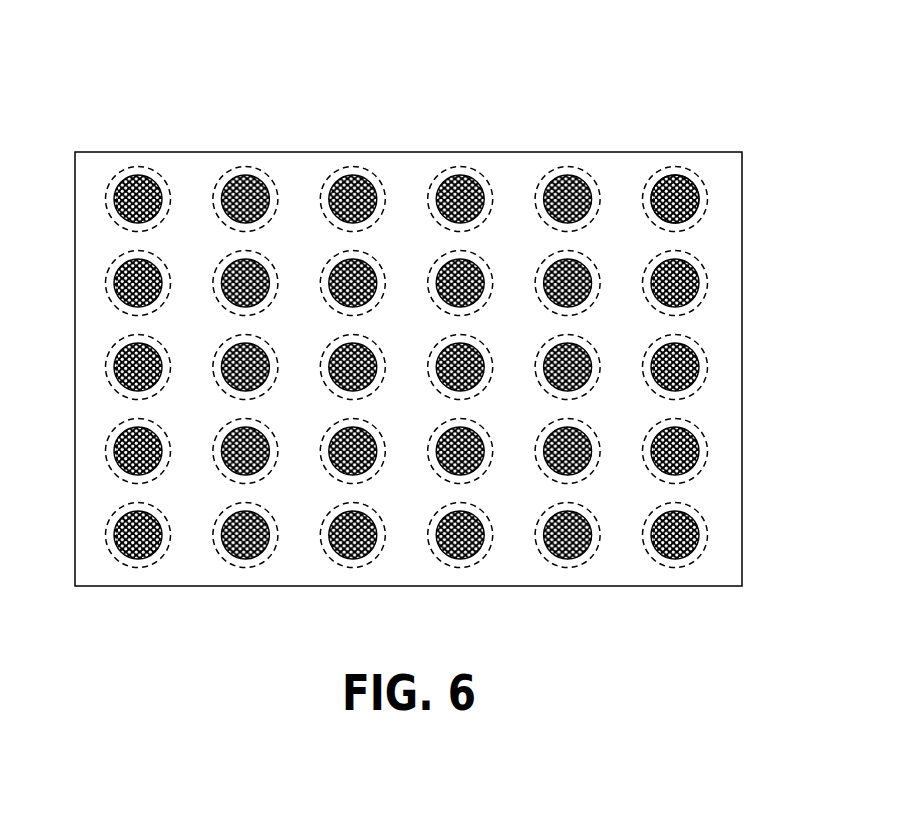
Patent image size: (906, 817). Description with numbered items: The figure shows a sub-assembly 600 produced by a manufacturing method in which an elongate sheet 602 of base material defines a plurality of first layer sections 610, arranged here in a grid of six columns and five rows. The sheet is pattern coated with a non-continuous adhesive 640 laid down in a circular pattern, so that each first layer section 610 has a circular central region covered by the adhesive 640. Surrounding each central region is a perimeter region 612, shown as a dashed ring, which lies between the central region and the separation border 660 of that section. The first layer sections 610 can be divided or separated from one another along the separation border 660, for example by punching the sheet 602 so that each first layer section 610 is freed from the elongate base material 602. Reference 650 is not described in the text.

The sub-assembly 600 is at (462, 66).
The elongate sheet 602 is at (720, 420).
The first layer section 610 is at (112, 184).
The perimeter region 612 is at (268, 177).
The separation border 660 is at (213, 189).
The non-continuous adhesive 640 is at (673, 177).
The sensor edge 650 is at (700, 213).